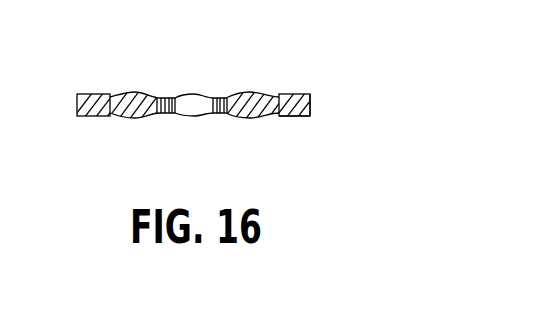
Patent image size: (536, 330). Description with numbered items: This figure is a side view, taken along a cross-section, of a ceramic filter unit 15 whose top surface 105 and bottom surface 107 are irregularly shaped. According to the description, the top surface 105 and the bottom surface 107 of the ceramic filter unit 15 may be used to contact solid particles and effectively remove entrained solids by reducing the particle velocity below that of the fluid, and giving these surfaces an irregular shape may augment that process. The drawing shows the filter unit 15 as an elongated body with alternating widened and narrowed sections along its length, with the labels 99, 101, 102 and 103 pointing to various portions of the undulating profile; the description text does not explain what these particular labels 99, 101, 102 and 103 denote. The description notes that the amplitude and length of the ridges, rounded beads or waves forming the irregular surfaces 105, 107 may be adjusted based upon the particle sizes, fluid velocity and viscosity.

The ceramic filter unit 15 is at (163, 118).
The outer surface of end portion 99 is at (118, 93).
The first bulbous portion 101 is at (144, 92).
The central portion 102 is at (191, 93).
The second bulbous portion 103 is at (243, 92).
The top surface 105 is at (296, 94).
The bottom surface 107 is at (296, 117).